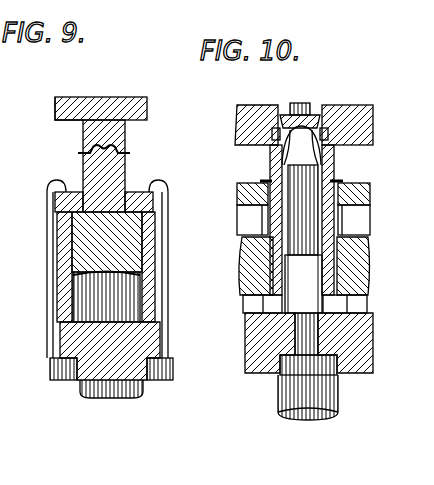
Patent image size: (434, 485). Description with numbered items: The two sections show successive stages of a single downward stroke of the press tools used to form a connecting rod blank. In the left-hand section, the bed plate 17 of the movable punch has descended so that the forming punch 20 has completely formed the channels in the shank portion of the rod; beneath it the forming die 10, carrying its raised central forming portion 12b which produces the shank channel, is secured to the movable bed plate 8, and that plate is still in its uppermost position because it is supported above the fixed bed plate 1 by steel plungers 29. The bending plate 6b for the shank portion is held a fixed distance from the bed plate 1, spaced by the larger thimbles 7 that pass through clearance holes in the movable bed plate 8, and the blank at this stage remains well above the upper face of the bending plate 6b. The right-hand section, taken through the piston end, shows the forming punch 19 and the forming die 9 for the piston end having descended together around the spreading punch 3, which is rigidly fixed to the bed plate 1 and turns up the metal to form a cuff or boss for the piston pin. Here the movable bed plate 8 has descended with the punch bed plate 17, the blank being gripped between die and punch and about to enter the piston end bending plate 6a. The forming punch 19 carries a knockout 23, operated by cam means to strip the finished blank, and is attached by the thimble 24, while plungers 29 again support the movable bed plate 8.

In FIG. 9, the bed plate 1 is at (90, 393).
In FIG. 10, the bed plate 1 is at (262, 352).
In FIG. 10, the spreading punch 3 is at (303, 260).
In FIG. 10, the bending plate, piston end 6a is at (370, 190).
In FIG. 9, the bending plate, shank portion 6b is at (180, 197).
In FIG. 9, the thimble 7 is at (62, 228).
In FIG. 9, the movable bed plate 8 is at (82, 253).
In FIG. 10, the movable bed plate 8 is at (360, 273).
In FIG. 10, the forming die for the piston end 9 is at (338, 220).
In FIG. 9, the forming die for the shank portion 10 is at (118, 178).
In FIG. 9, the raised central forming portion 12b is at (125, 152).
In FIG. 9, the bed plate of movable punch 17 is at (148, 107).
In FIG. 10, the bed plate of movable punch 17 is at (242, 120).
In FIG. 10, the forming punch 19 is at (335, 165).
In FIG. 9, the forming punch 20 is at (83, 127).
In FIG. 10, the knockout 23 is at (310, 112).
In FIG. 10, the thimble 24 is at (343, 133).
In FIG. 9, the plunger 29 is at (106, 297).
In FIG. 10, the plunger 29 is at (308, 397).